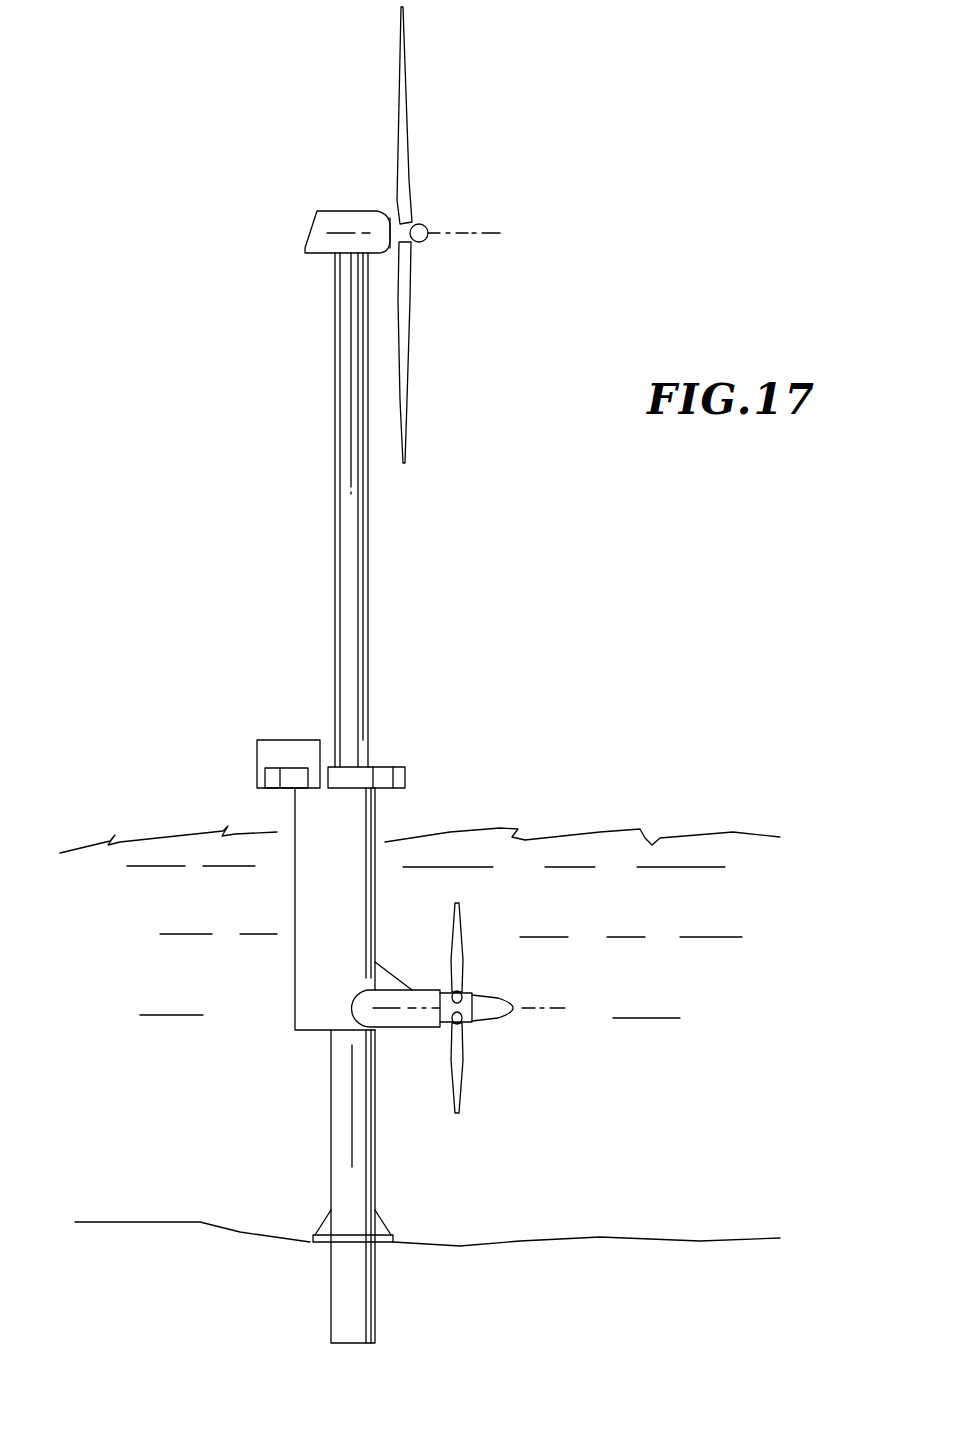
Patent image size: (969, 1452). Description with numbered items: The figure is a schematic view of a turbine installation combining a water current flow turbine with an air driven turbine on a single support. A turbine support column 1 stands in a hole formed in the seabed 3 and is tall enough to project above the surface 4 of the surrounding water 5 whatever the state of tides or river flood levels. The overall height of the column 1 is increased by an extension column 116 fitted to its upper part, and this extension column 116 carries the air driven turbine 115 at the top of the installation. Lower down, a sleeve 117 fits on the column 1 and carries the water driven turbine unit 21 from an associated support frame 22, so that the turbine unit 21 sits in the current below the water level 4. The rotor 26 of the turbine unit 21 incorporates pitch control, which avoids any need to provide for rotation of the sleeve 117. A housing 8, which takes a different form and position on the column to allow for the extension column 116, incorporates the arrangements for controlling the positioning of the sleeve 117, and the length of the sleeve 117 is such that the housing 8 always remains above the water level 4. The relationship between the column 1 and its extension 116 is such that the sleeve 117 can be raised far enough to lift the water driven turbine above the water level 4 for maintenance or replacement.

The column 1 is at (342, 1155).
The seabed 3 is at (203, 1289).
The surface of the surrounding water 4 is at (652, 845).
The surrounding water 5 is at (671, 1045).
The housing 8 is at (267, 748).
The water driven turbine unit 21 is at (414, 1020).
The support frame 22 is at (382, 982).
The rotor 26 is at (467, 1023).
The air driven turbine 115 is at (343, 225).
The extension column 116 is at (347, 523).
The sleeve 117 is at (348, 1022).